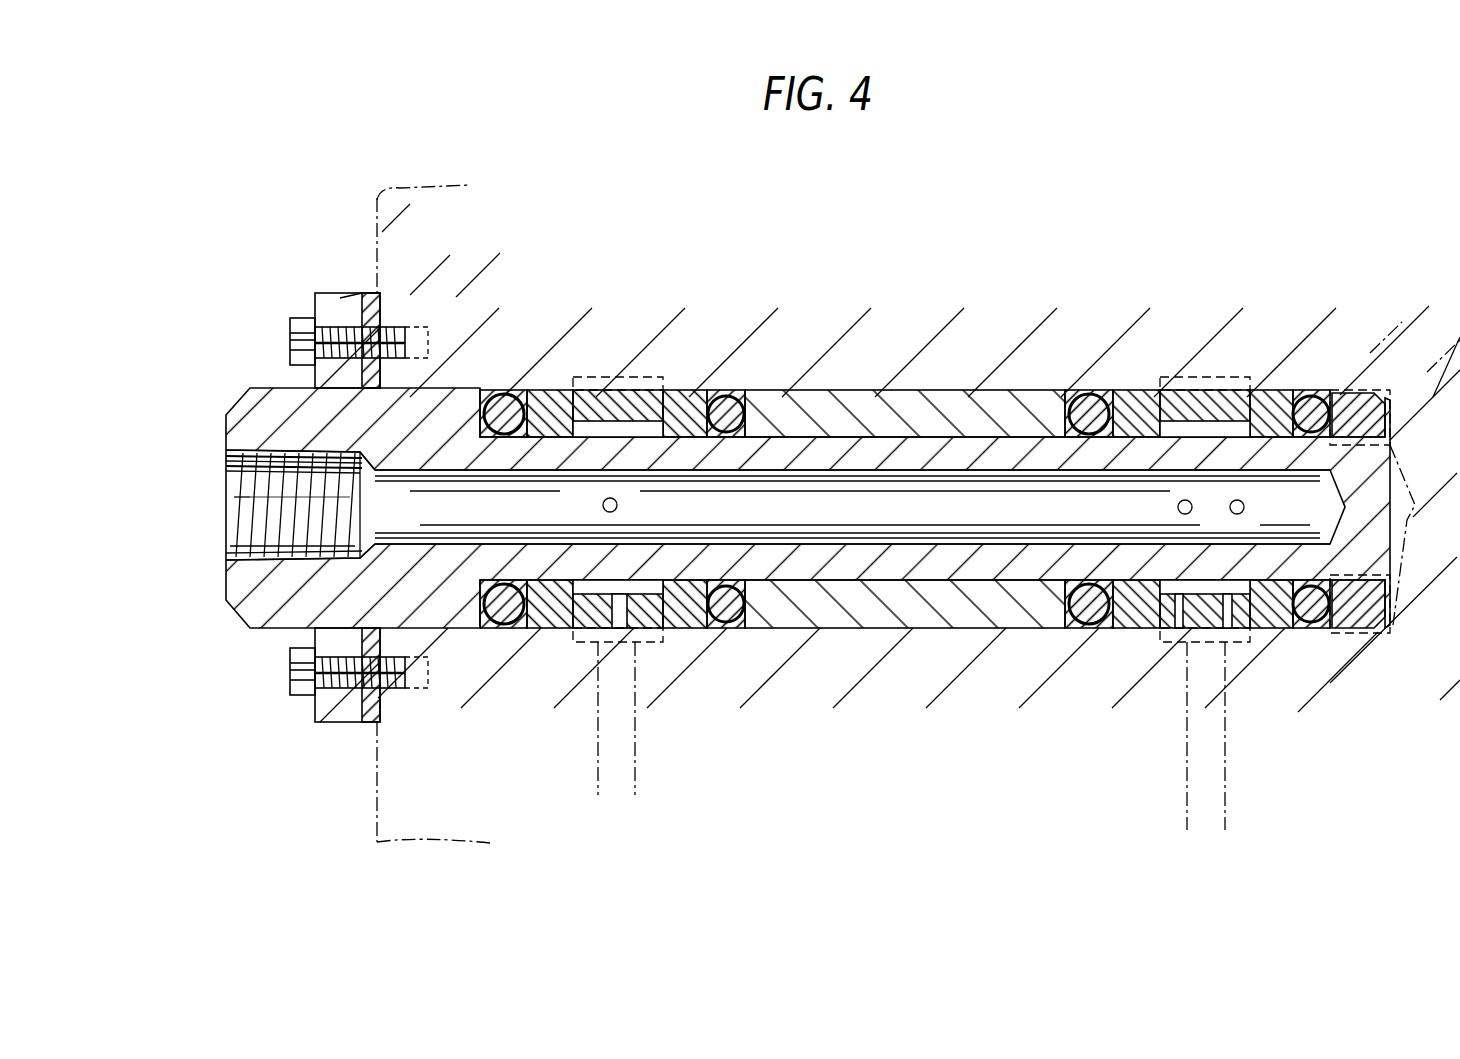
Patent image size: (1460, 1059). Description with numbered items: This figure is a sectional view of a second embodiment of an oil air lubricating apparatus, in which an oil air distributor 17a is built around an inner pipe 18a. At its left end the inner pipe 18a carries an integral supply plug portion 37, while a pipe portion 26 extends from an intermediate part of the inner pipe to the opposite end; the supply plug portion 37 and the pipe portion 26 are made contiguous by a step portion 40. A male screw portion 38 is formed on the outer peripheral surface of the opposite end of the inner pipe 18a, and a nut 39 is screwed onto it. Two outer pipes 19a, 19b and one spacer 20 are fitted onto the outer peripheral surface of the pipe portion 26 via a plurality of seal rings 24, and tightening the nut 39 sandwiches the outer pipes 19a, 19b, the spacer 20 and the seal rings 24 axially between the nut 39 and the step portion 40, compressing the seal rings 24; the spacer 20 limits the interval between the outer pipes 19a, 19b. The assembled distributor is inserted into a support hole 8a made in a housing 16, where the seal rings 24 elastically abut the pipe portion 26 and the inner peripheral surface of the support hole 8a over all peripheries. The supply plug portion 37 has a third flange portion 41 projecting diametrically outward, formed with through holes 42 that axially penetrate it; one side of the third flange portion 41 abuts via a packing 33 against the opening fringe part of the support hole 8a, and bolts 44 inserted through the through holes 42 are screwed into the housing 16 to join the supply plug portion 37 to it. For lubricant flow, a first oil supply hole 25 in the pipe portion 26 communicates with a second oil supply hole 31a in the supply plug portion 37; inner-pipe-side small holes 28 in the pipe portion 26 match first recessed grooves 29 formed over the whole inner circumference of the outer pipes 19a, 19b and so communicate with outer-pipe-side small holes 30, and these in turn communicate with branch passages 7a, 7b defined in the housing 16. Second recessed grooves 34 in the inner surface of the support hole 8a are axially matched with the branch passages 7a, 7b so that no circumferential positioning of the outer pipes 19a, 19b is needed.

The branch passage 7a is at (636, 690).
The branch passage 7b is at (1190, 720).
The support hole 8a is at (958, 640).
The housing 16 is at (396, 731).
The oil air distributor 17a is at (1006, 378).
The inner pipe 18a is at (893, 575).
The outer pipe 19a is at (553, 618).
The outer pipe 19b is at (1283, 620).
The spacer 20 is at (1033, 612).
The seal ring 24 is at (502, 390).
The first oil supply hole 25 is at (852, 480).
The pipe portion 26 is at (937, 395).
The inner-pipe-side small hole 28 is at (610, 498).
The first recessed groove 29 is at (683, 390).
The outer-pipe-side small hole 30 is at (620, 630).
The second oil supply hole 31a is at (224, 468).
The packing 33 is at (380, 707).
The second recessed groove 34 is at (663, 375).
The supply plug portion 37 is at (262, 388).
The male screw portion 38 is at (1350, 632).
The nut 39 is at (1357, 392).
The step portion 40 is at (503, 622).
The third flange portion 41 is at (342, 305).
The through hole 42 is at (385, 325).
The bolt 44 is at (302, 320).